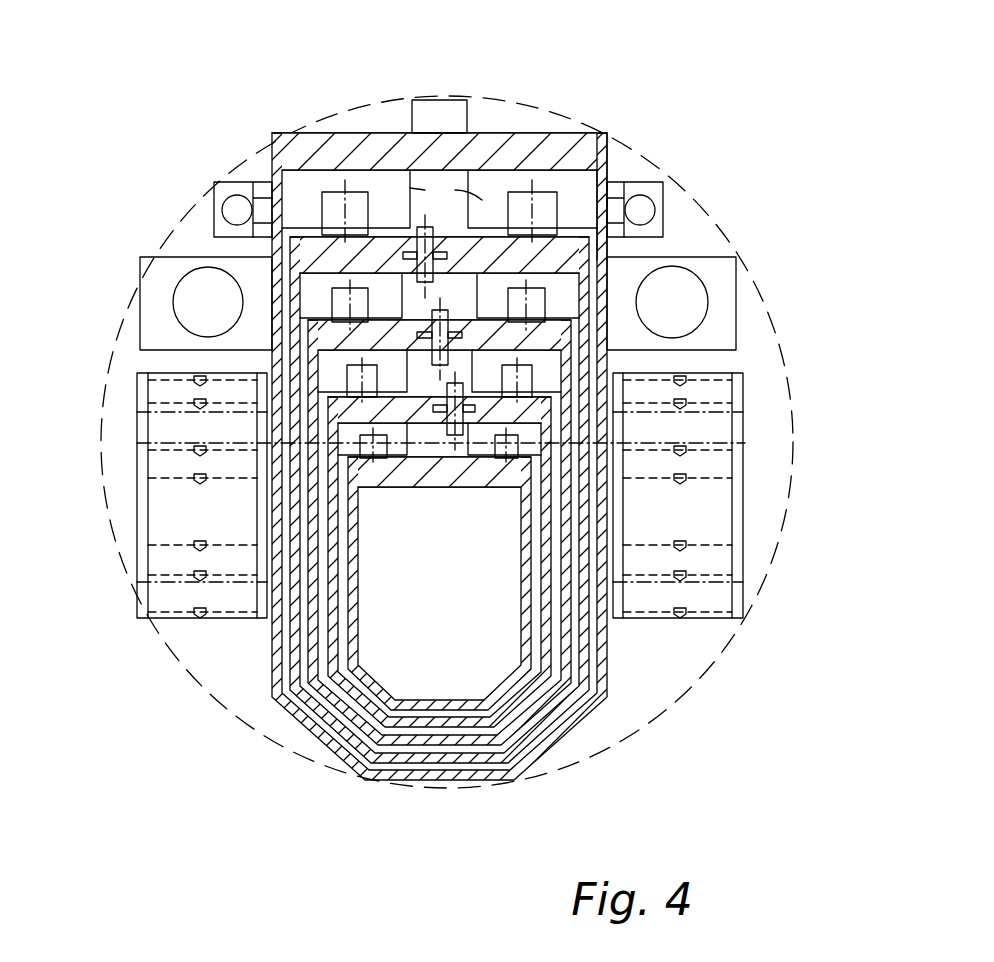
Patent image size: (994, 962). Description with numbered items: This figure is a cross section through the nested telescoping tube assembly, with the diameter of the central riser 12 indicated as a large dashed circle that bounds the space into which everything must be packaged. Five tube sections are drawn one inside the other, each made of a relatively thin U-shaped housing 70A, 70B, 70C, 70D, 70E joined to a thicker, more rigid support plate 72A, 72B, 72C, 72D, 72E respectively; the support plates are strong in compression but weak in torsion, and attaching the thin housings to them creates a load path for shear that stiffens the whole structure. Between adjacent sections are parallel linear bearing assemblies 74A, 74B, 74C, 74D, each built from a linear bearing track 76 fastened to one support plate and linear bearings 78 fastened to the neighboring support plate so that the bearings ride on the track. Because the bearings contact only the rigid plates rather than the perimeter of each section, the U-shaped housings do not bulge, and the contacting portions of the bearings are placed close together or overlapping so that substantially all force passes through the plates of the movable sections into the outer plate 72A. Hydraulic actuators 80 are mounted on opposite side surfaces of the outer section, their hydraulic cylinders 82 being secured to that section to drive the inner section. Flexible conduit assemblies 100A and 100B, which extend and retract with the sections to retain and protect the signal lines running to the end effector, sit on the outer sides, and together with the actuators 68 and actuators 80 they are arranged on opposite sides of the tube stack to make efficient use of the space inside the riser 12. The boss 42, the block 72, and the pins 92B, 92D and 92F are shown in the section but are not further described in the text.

The central riser 12 is at (788, 360).
The mounting boss 42 is at (467, 108).
The actuators 68 is at (168, 280).
The U-shaped housing 70A is at (557, 747).
The U-shaped housing 70B is at (500, 760).
The U-shaped housing 70C is at (430, 740).
The U-shaped housing 70D is at (345, 705).
The U-shaped housing 70E is at (363, 720).
The side block 72 is at (193, 262).
The support plate 72A is at (531, 140).
The support plate 72B is at (603, 135).
The support plate 72C is at (572, 316).
The support plate 72D is at (547, 397).
The support plate 72E is at (482, 487).
The linear bearing assembly 74A is at (492, 187).
The linear bearing assembly 74B is at (553, 288).
The linear bearing assembly 74C is at (342, 380).
The linear bearing assembly 74D is at (528, 433).
The linear bearing track 76 is at (337, 207).
The linear bearings 78 is at (446, 190).
The actuators 80 is at (254, 178).
The hydraulic cylinders 82 is at (232, 192).
The pin 92B is at (403, 258).
The pin 92D is at (415, 335).
The pin 92F is at (433, 410).
The flexible conduit assembly 100A is at (122, 522).
The flexible conduit assembly 100B is at (748, 495).